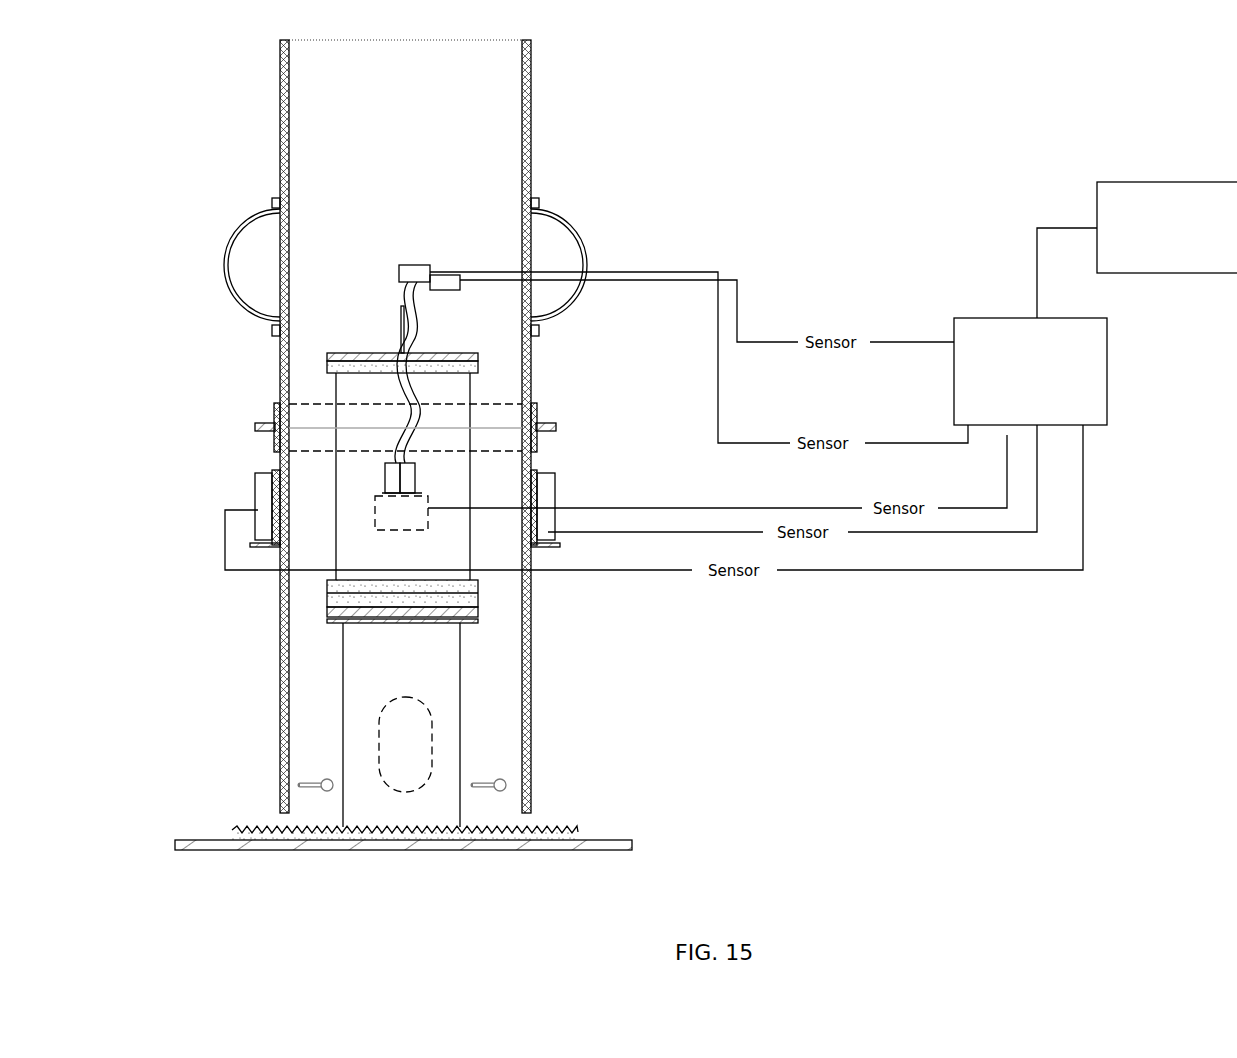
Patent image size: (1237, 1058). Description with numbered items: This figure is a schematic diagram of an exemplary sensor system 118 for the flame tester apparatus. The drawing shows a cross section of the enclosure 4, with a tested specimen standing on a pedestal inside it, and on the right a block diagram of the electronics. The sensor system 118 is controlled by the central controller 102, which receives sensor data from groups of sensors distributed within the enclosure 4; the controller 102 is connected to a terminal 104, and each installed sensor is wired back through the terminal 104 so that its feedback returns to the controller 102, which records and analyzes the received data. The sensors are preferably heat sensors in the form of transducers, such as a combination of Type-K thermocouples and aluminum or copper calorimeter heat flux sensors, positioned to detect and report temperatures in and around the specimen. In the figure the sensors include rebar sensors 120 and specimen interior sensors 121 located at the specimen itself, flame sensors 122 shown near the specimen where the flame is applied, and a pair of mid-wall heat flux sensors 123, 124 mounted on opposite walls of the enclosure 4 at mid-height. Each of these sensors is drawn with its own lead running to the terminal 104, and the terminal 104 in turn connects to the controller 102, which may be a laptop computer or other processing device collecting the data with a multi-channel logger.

The enclosure 4 is at (294, 161).
The sensor system 118 is at (703, 205).
The controller 102 is at (1140, 190).
The terminal 104 is at (1097, 368).
The rebar sensors 120 is at (385, 496).
The specimen interior sensors 121 is at (415, 478).
The flame sensors 122 is at (375, 497).
The mid-wall heat flux sensor 123 is at (263, 513).
The mid-wall heat flux sensor 124 is at (553, 478).